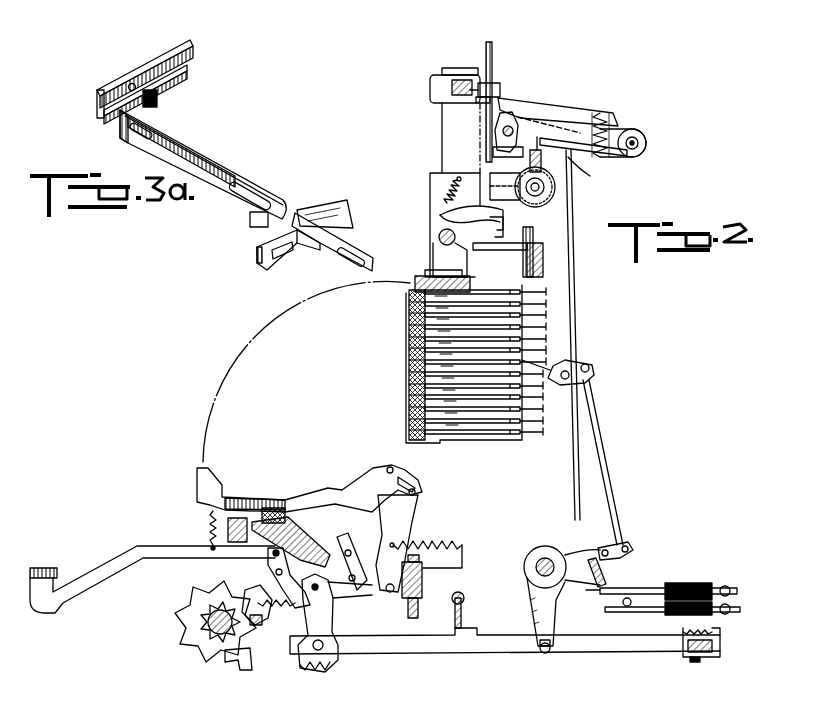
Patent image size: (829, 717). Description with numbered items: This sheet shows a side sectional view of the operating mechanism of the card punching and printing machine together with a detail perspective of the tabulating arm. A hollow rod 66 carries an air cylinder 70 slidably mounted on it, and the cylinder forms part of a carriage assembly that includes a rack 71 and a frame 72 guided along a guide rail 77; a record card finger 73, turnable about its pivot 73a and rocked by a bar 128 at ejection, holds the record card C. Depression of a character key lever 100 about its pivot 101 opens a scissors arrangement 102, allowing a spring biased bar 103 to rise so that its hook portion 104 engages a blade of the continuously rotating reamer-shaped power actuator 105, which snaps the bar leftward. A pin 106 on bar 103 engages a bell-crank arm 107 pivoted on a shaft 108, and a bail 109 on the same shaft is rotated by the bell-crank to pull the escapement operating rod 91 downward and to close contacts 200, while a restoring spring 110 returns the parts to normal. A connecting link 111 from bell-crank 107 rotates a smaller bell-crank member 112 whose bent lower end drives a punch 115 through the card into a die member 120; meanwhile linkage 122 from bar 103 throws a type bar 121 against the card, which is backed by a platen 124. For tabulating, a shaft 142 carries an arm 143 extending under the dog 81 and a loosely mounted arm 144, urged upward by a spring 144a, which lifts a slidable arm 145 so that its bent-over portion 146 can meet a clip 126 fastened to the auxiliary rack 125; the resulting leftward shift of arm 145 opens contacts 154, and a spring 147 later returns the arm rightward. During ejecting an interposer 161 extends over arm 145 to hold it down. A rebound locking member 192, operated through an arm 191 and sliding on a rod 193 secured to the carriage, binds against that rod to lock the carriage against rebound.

In FIG. 3A, the spring 147 is at (178, 82).
In FIG. 3A, the contacts 154 is at (131, 83).
In FIG. 3A, the arm 145 is at (198, 153).
In FIG. 2, the arm 145 is at (497, 85).
In FIG. 3A, the arm 144 is at (316, 205).
In FIG. 2, the arm 144 is at (559, 110).
In FIG. 3A, the bent-over portion 146 is at (250, 224).
In FIG. 2, the bent-over portion 146 is at (477, 102).
In FIG. 3A, the interposer 161 is at (364, 254).
In FIG. 3A, the clip 126 is at (258, 268).
In FIG. 2, the clip 126 is at (432, 91).
In FIG. 2, the auxiliary rack 125 is at (459, 79).
In FIG. 2, the arm 191 is at (498, 121).
In FIG. 2, the rebound locking member 192 is at (496, 151).
In FIG. 2, the rod 193 is at (511, 127).
In FIG. 2, the spring 144a is at (610, 122).
In FIG. 2, the shaft 142 is at (646, 141).
In FIG. 2, the dog 81 is at (541, 137).
In FIG. 2, the arm 143 is at (582, 158).
In FIG. 2, the rack 71 is at (589, 178).
In FIG. 2, the air cylinder 70 is at (556, 187).
In FIG. 2, the hollow rod 66 is at (543, 193).
In FIG. 2, the frame 72 is at (432, 187).
In FIG. 2, the pivot 73a is at (440, 234).
In FIG. 2, the record card finger 73 is at (432, 256).
In FIG. 2, the bar 128 is at (515, 224).
In FIG. 2, the guide rail 77 is at (527, 272).
In FIG. 2, the escapement operating rod 91 is at (572, 284).
In FIG. 2, the platen 124 is at (413, 285).
In FIG. 2, the record card C is at (415, 360).
In FIG. 2, the die member 120 is at (410, 383).
In FIG. 2, the punch 115 is at (544, 318).
In FIG. 2, the bell-crank member 112 is at (571, 364).
In FIG. 2, the connecting link 111 is at (604, 433).
In FIG. 2, the shaft 108 is at (545, 557).
In FIG. 2, the bell-crank arm 107 is at (536, 614).
In FIG. 2, the pin 106 is at (545, 653).
In FIG. 2, the bail 109 is at (610, 563).
In FIG. 2, the contacts 200 is at (626, 603).
In FIG. 2, the restoring spring 110 is at (683, 628).
In FIG. 2, the bar 103 is at (425, 648).
In FIG. 2, the type bar 121 is at (265, 488).
In FIG. 2, the character key lever 100 is at (50, 568).
In FIG. 2, the pivot 101 is at (272, 553).
In FIG. 2, the scissors arrangement 102 is at (250, 593).
In FIG. 2, the power actuator 105 is at (196, 640).
In FIG. 2, the hook portion 104 is at (236, 672).
In FIG. 2, the linkage 122 is at (326, 607).